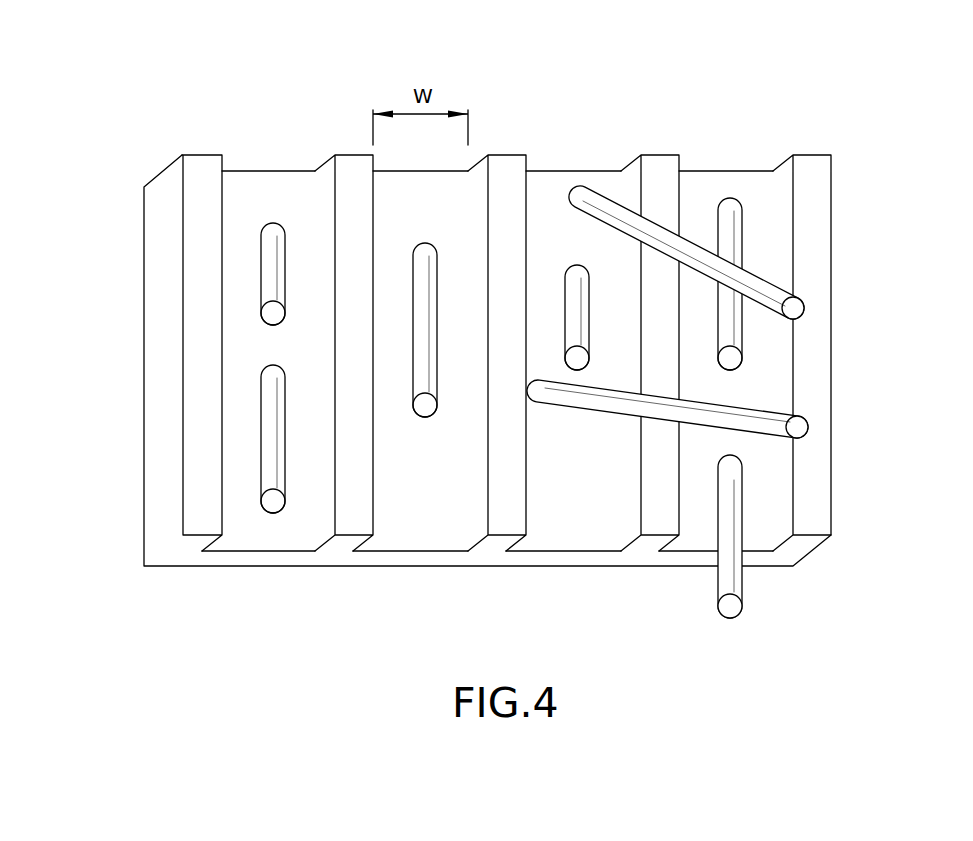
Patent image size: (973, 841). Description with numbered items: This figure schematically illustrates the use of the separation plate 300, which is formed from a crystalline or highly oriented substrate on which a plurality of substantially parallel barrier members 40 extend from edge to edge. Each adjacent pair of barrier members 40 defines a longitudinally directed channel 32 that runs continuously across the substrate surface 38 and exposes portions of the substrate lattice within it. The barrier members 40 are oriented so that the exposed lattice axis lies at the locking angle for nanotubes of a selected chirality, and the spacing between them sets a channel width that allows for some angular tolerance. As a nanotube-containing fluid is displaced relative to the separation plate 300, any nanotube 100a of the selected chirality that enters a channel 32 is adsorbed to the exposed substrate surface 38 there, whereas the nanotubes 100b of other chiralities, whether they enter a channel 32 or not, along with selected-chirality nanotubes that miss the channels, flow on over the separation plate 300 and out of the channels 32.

The separation plate 300 is at (873, 132).
The channel 32 is at (272, 188).
The substrate surface 38 is at (418, 530).
The barrier member 40 is at (658, 165).
The nanotube of the selected chirality 100a is at (790, 277).
The nanotube of other chirality 100b is at (800, 427).